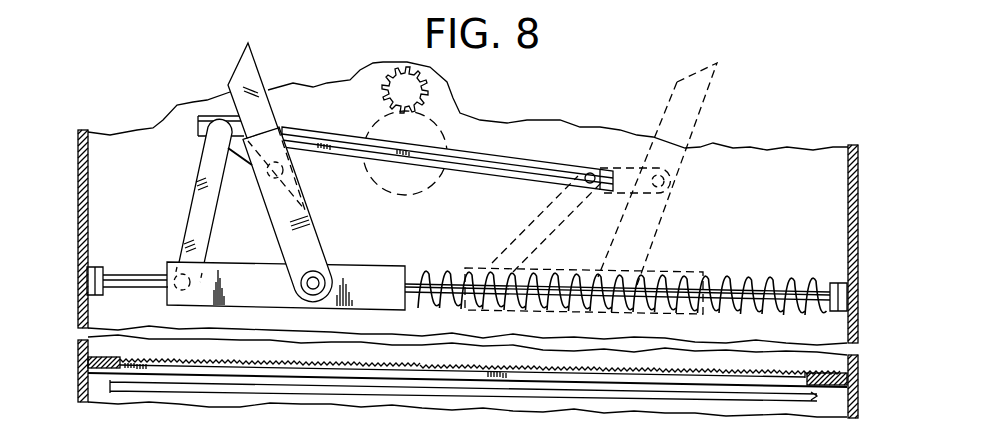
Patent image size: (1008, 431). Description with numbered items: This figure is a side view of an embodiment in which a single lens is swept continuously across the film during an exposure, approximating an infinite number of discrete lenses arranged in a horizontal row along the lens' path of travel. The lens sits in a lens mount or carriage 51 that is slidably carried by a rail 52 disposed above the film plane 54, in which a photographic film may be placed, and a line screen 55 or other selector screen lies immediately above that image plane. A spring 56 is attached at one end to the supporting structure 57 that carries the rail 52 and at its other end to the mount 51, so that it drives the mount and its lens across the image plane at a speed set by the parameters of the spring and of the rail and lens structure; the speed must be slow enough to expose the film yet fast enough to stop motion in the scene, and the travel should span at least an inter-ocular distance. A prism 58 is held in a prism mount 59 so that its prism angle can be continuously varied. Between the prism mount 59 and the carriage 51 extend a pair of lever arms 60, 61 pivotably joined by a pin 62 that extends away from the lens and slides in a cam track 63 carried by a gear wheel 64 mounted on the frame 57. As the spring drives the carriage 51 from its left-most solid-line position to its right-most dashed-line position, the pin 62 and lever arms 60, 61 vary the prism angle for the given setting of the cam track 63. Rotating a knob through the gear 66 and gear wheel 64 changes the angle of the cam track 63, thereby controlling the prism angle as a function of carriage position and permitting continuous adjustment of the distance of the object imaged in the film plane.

The lens mount 51 is at (170, 297).
The rail 52 is at (450, 288).
The film plane 54 is at (182, 387).
The line screen 55 is at (241, 363).
The spring 56 is at (765, 284).
The supporting structure 57 is at (858, 250).
The prism 58 is at (242, 72).
The prism mount 59 is at (312, 232).
The lever arm 60 is at (235, 158).
The lever arm 61 is at (190, 228).
The pin 62 is at (220, 133).
The cam track 63 is at (484, 172).
The gear wheel 64 is at (430, 137).
The gear 66 is at (393, 92).